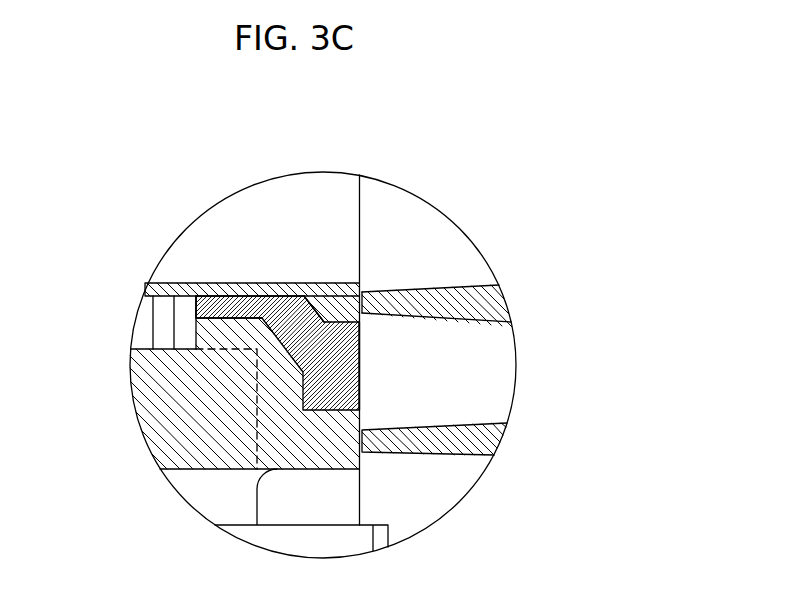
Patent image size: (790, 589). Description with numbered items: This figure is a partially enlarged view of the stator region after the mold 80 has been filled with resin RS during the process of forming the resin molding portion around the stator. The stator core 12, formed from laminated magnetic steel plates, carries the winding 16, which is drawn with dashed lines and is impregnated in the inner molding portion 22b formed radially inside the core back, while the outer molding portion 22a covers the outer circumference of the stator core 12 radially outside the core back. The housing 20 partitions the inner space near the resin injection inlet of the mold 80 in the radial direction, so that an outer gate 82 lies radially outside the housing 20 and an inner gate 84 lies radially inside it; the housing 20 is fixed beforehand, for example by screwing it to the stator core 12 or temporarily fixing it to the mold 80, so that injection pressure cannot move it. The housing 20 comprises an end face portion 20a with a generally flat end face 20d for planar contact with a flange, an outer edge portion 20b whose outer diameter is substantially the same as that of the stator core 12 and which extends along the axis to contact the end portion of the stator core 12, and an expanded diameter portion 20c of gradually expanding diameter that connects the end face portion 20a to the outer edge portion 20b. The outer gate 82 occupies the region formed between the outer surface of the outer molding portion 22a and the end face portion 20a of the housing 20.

The stator core 12 is at (145, 323).
The winding 16 is at (257, 420).
The housing 20 is at (362, 394).
The end face portion 20a is at (348, 364).
The outer edge portion 20b is at (230, 303).
The expanded diameter portion 20c is at (310, 317).
The end face 20d is at (362, 343).
The outer molding portion 22a is at (182, 292).
The inner molding portion 22b is at (197, 425).
The mold 80 is at (283, 193).
The outer gate 82 is at (390, 304).
The inner gate 84 is at (388, 440).
The resin RS is at (488, 308).